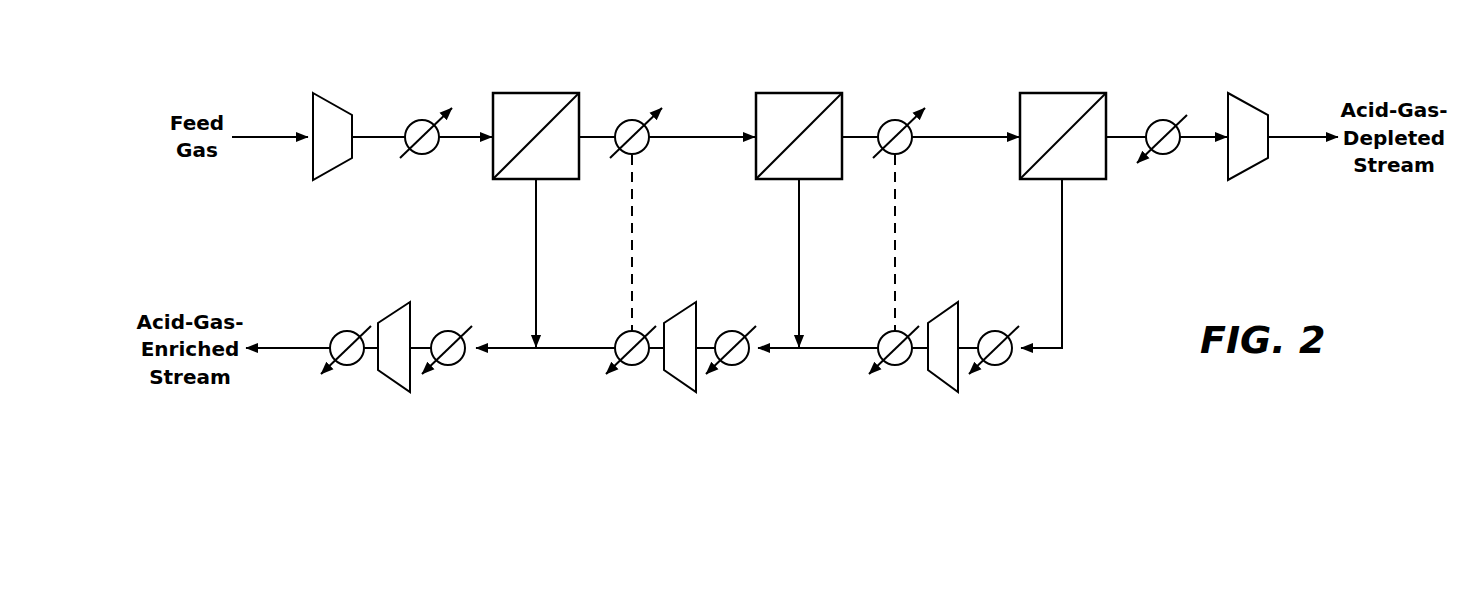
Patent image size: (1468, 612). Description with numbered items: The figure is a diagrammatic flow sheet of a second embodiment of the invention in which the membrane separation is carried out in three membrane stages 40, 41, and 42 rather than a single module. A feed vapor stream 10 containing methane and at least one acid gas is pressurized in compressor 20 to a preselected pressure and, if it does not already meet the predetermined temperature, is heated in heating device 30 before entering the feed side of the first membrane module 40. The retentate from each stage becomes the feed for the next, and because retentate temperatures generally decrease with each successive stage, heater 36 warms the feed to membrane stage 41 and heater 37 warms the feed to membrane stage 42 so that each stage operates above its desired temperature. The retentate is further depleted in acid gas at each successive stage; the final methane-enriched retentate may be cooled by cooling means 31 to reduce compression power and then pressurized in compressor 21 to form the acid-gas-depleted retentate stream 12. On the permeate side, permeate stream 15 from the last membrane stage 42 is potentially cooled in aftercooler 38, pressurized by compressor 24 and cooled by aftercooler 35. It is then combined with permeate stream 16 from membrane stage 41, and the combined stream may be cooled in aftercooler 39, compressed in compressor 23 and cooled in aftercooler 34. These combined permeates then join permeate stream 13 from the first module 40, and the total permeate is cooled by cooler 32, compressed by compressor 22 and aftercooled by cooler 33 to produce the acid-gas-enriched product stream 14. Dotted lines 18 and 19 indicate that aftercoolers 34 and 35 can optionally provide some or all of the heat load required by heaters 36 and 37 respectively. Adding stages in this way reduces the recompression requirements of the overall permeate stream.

The vapor stream 10 is at (275, 135).
The compressor 20 is at (330, 102).
The heating device 30 is at (427, 115).
The membrane module 40 is at (540, 93).
The heater 36 is at (637, 115).
The membrane stage 41 is at (803, 93).
The heater 37 is at (900, 115).
The membrane stage 42 is at (1067, 93).
The cooling means 31 is at (1167, 115).
The compressor 21 is at (1244, 97).
The retentate stream 12 is at (1289, 133).
The permeate stream 13 is at (538, 233).
The dotted line 18 is at (634, 233).
The permeate stream 16 is at (801, 233).
The dotted line 19 is at (897, 233).
The permeate stream 15 is at (1064, 233).
The acid-gas product stream 14 is at (300, 346).
The aftercooler 33 is at (352, 327).
The compressor 22 is at (393, 385).
The cooler 32 is at (438, 325).
The aftercooler 34 is at (628, 327).
The compressor 23 is at (679, 385).
The aftercooler 39 is at (723, 325).
The aftercooler 35 is at (890, 327).
The compressor 24 is at (940, 385).
The aftercooler 38 is at (985, 325).